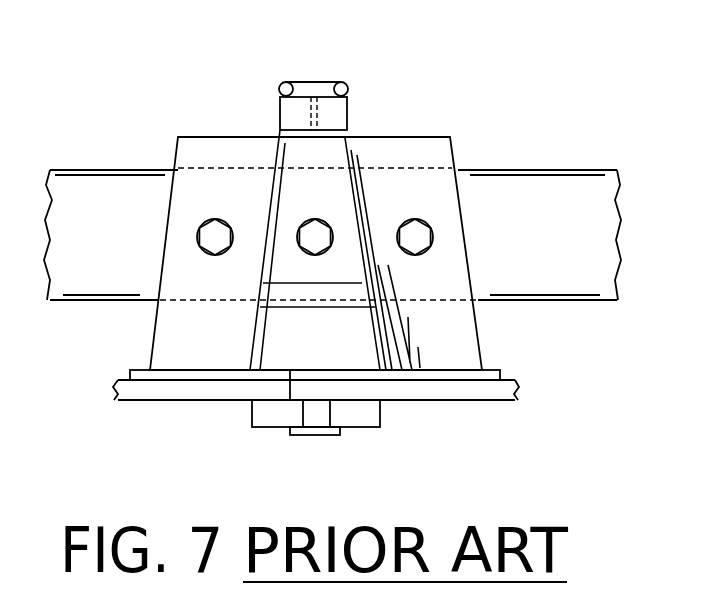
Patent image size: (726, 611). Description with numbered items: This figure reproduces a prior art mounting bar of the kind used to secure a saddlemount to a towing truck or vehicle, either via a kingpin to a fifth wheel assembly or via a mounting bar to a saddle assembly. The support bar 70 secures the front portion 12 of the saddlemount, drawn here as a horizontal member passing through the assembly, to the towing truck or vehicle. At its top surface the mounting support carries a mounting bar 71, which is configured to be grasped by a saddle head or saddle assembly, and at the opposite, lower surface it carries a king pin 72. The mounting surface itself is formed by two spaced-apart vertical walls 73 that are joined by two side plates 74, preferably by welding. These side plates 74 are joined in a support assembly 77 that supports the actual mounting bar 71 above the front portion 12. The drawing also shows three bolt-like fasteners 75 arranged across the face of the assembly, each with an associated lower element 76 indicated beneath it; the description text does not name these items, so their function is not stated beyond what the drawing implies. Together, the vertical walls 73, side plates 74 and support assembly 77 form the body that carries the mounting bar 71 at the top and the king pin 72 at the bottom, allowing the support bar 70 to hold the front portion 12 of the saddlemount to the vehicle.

The support bar 70 is at (598, 78).
The mounting bar 71 is at (346, 86).
The king pin 72 is at (322, 436).
The vertical walls 73 is at (208, 350).
The side plates 74 is at (265, 262).
The bolt heads 75 is at (216, 218).
The bolt holes 76 is at (210, 250).
The support assembly 77 is at (280, 112).
The front portion 12 is at (550, 168).